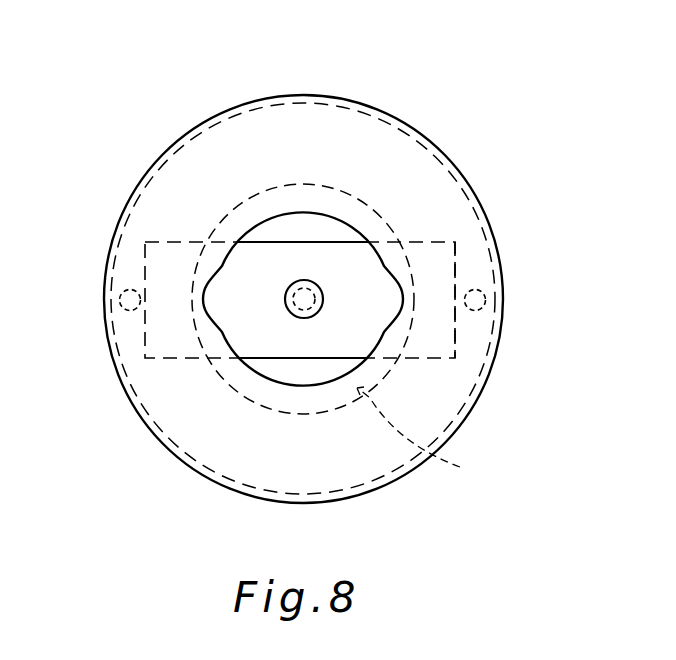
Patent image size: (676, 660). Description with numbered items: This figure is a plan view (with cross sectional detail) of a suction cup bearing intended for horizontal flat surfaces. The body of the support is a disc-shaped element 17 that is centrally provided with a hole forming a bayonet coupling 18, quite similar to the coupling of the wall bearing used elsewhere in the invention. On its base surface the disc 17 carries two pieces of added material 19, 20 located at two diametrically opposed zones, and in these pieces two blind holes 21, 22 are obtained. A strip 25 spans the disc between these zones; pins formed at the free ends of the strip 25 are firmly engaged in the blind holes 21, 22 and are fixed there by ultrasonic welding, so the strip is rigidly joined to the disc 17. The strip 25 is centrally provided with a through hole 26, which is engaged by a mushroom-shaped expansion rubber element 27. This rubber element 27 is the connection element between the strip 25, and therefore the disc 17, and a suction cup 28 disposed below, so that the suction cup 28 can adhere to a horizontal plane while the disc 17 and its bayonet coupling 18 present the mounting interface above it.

The disc-shaped element 17 is at (390, 158).
The bayonet coupling 18 is at (368, 283).
The piece of added material 19 is at (128, 268).
The piece of added material 20 is at (477, 270).
The blind hole 21 is at (118, 301).
The blind hole 22 is at (486, 298).
The strip 25 is at (172, 257).
The through hole 26 is at (312, 280).
The mushroom-shaped expansion rubber element 27 is at (292, 318).
The suction cup 28 is at (428, 435).